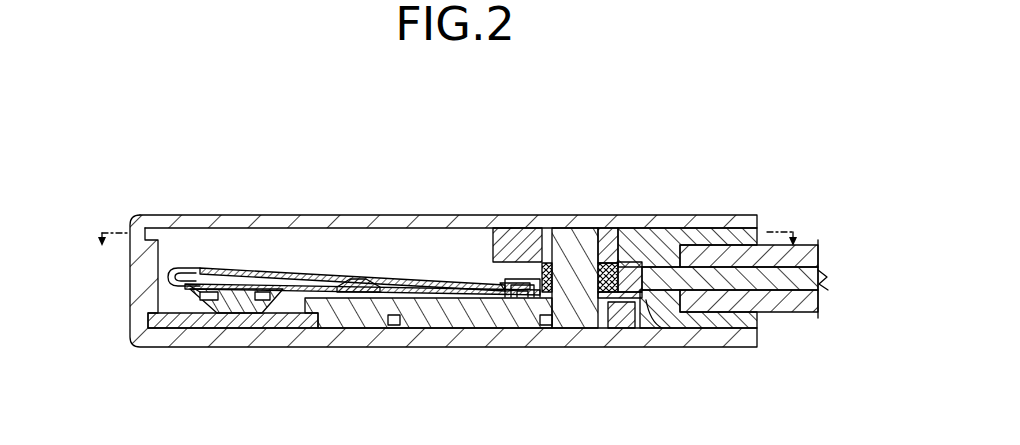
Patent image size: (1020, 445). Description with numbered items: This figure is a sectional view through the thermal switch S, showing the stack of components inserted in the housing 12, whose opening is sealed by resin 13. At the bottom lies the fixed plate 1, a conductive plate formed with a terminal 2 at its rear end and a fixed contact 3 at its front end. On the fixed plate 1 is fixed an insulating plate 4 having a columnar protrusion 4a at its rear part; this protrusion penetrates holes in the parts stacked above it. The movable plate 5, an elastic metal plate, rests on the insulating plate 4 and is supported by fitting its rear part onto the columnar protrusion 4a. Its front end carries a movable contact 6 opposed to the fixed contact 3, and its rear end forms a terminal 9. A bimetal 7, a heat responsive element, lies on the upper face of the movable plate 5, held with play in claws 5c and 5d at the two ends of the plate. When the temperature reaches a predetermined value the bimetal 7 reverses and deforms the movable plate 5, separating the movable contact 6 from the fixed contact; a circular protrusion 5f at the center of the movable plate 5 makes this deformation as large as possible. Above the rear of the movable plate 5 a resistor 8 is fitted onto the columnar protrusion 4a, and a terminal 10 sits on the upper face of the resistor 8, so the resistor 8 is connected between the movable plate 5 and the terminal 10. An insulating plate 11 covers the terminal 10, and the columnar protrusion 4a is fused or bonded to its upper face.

The switch S is at (491, 175).
The fixed plate 1 is at (430, 332).
The terminal 2 is at (622, 325).
The fixed contact 3 is at (213, 330).
The insulating plate 4 is at (353, 322).
The columnar protrusion 4a is at (573, 300).
The movable plate 5 is at (400, 292).
The claw 5c is at (183, 266).
The claw 5d is at (510, 268).
The circular protrusion 5f is at (350, 275).
The movable contact 6 is at (232, 297).
The bimetal 7 is at (265, 265).
The resistor 8 is at (533, 300).
The terminal 9 is at (685, 327).
The terminal 10 is at (647, 250).
The insulating plate 11 is at (507, 237).
The housing 12 is at (380, 216).
The resin 13 is at (635, 236).